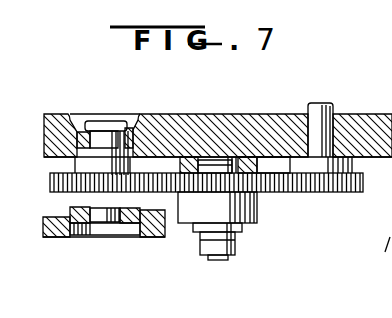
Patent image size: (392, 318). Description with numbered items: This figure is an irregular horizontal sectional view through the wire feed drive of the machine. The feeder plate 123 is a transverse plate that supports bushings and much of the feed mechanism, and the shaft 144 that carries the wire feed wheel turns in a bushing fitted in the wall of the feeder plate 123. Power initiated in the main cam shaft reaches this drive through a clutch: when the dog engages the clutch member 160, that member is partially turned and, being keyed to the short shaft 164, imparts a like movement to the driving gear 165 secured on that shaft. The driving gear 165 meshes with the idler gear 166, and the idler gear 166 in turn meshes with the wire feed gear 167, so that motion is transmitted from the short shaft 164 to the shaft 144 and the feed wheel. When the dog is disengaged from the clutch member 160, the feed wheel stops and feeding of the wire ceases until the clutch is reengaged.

The feeder plate 123 is at (250, 120).
The shaft 144 is at (308, 112).
The clutch member 160 is at (58, 236).
The short shaft 164 is at (106, 133).
The driving gear 165 is at (148, 193).
The idler gear 166 is at (255, 184).
The wire feed gear 167 is at (342, 178).